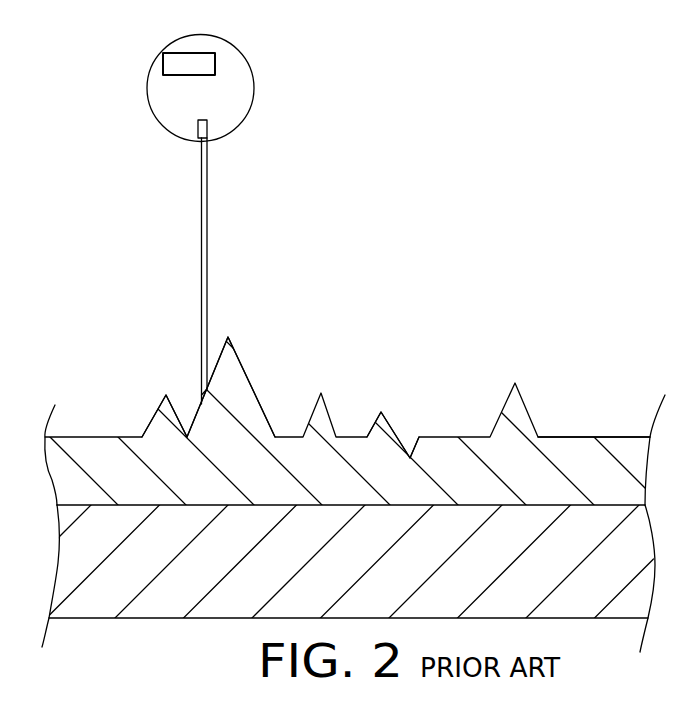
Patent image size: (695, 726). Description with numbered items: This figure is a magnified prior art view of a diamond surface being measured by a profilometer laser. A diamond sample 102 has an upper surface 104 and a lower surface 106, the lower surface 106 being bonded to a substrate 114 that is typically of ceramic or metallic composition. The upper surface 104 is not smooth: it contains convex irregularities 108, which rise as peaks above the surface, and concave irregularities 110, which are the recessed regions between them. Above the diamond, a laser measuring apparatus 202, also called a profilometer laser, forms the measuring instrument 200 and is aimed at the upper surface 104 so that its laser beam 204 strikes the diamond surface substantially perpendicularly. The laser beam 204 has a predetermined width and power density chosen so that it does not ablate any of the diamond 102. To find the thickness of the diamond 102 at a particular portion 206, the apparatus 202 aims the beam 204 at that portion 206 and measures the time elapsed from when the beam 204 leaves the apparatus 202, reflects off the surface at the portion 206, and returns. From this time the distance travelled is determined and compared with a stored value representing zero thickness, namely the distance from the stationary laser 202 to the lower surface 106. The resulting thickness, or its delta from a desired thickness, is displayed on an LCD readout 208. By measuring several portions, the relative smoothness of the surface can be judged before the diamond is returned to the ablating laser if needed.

The diamond sample 102 is at (626, 452).
The upper surface 104 is at (567, 437).
The lower surface 106 is at (140, 505).
The convex irregularities 108 is at (255, 393).
The concave irregularities 110 is at (187, 437).
The substrate 114 is at (605, 570).
The thickness gauge 200 is at (468, 117).
The laser measuring apparatus 202 is at (242, 52).
The laser beam 204 is at (207, 254).
The portion 206 is at (217, 358).
The LCD readout 208 is at (163, 62).